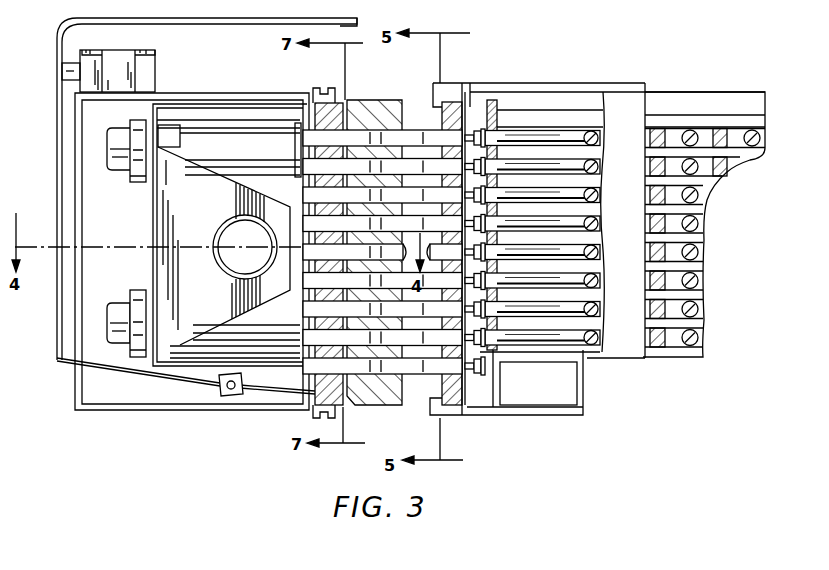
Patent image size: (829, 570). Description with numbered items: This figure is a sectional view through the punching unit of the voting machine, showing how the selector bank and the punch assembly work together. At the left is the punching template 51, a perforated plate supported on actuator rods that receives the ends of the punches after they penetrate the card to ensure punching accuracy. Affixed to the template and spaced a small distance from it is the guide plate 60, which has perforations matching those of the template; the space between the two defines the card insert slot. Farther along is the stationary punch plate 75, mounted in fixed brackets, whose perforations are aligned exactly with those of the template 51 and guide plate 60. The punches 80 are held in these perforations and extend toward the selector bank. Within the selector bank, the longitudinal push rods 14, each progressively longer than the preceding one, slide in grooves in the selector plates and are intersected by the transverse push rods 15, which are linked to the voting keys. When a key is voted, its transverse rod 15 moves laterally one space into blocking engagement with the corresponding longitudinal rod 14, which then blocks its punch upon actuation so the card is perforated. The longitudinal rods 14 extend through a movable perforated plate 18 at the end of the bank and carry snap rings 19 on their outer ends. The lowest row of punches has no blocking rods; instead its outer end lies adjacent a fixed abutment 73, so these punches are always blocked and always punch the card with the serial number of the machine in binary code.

The longitudinal push rods 14 is at (562, 220).
The transverse push rods 15 is at (692, 255).
The movable perforated plate 18 is at (497, 100).
The snap rings 19 is at (483, 130).
The punching template 51 is at (317, 116).
The guide plate 60 is at (373, 108).
The fixed abutment 73 is at (493, 390).
The punch plate 75 is at (453, 96).
The punches 80 is at (417, 130).